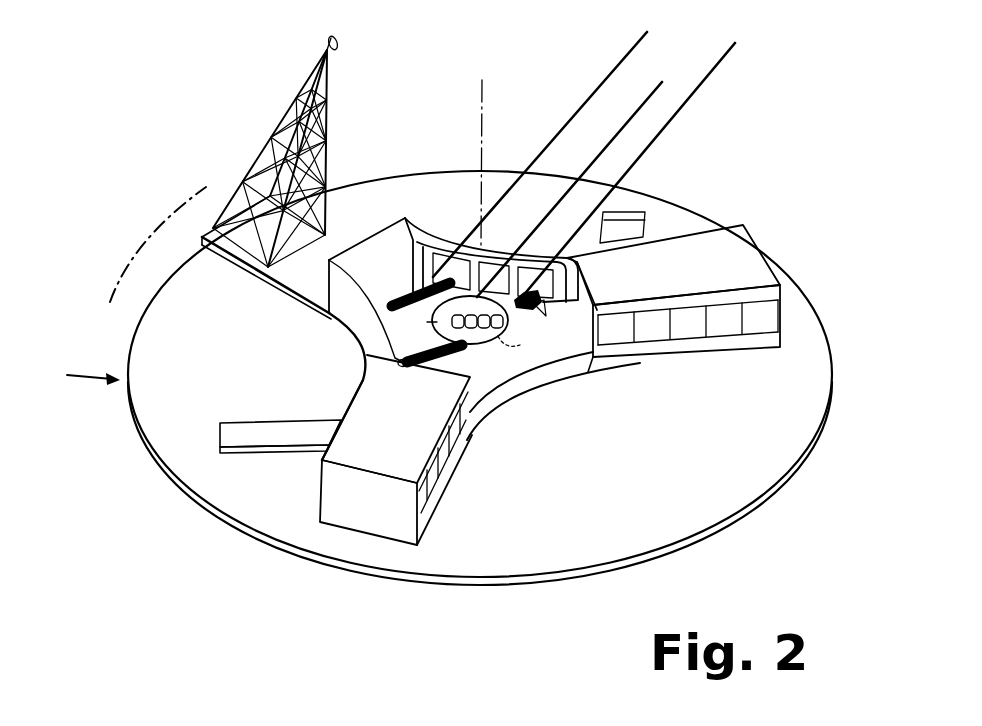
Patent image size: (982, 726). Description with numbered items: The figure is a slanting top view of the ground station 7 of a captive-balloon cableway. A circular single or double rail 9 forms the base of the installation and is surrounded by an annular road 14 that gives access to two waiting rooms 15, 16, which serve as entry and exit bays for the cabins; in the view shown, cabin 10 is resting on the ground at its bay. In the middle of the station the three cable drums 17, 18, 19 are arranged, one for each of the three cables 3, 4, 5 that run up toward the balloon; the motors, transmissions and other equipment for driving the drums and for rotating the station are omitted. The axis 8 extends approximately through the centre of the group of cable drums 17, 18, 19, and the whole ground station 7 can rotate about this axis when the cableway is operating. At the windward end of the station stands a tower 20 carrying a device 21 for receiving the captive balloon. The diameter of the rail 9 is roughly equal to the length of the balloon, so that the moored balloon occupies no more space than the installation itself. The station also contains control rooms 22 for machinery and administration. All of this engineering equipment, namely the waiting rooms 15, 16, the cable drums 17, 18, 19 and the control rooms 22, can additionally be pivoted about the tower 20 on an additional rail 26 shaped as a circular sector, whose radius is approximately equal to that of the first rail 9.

The cable 3 is at (640, 103).
The cable 4 is at (693, 87).
The cable 5 is at (582, 103).
The ground station 7 is at (93, 368).
The axis 8 is at (482, 80).
The rail 9 is at (800, 468).
The cabin 10 is at (472, 343).
The annular road 14 is at (165, 238).
The waiting room 15 is at (375, 448).
The waiting room 16 is at (745, 273).
The cable drum 17 is at (401, 356).
The cable drum 18 is at (541, 293).
The cable drum 19 is at (536, 291).
The tower 20 is at (253, 160).
The device for receiving the captive balloon 21 is at (323, 46).
The control rooms 22 is at (397, 232).
The additional rail 26 is at (277, 437).